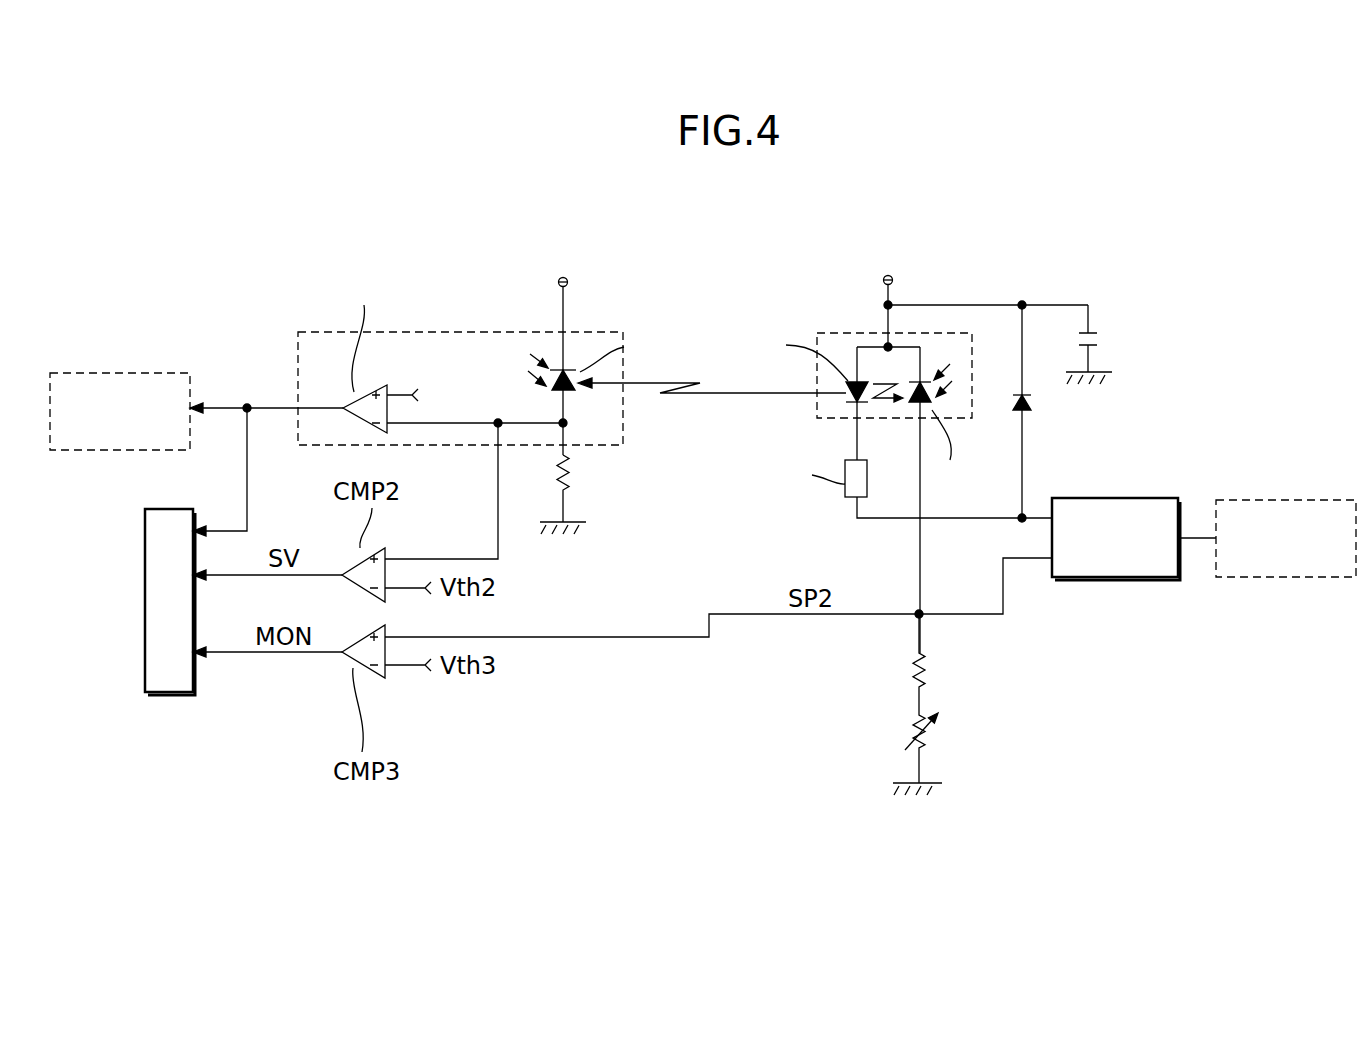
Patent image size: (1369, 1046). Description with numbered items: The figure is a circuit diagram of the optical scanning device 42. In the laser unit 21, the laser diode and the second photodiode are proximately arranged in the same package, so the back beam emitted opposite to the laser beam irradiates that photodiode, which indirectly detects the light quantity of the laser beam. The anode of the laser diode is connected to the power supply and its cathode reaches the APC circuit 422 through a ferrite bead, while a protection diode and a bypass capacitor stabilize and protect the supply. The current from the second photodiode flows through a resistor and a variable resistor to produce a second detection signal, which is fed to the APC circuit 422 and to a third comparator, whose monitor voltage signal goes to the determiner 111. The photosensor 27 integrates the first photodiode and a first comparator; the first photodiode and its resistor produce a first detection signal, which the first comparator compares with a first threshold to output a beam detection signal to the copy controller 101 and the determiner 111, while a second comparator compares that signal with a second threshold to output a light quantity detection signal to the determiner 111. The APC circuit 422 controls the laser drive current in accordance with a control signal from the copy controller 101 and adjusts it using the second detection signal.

The copy controller 101 is at (140, 373).
The photosensor 27 is at (298, 367).
The laser unit 21 is at (836, 333).
The optical scanning device 42 is at (897, 504).
The determiner 111 is at (163, 694).
The APC circuit 422 is at (1143, 498).